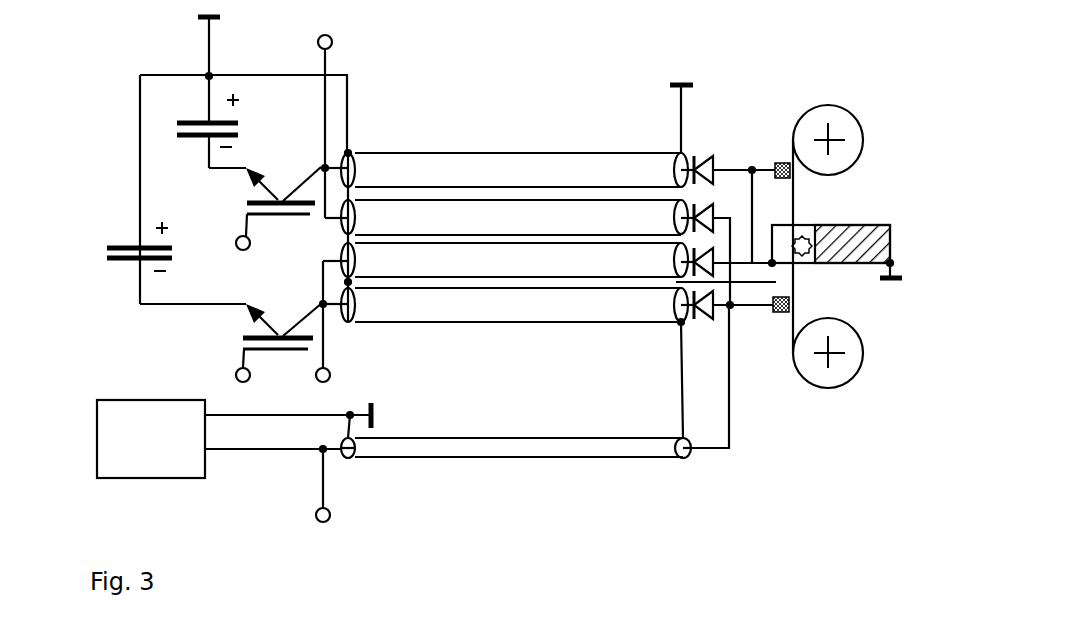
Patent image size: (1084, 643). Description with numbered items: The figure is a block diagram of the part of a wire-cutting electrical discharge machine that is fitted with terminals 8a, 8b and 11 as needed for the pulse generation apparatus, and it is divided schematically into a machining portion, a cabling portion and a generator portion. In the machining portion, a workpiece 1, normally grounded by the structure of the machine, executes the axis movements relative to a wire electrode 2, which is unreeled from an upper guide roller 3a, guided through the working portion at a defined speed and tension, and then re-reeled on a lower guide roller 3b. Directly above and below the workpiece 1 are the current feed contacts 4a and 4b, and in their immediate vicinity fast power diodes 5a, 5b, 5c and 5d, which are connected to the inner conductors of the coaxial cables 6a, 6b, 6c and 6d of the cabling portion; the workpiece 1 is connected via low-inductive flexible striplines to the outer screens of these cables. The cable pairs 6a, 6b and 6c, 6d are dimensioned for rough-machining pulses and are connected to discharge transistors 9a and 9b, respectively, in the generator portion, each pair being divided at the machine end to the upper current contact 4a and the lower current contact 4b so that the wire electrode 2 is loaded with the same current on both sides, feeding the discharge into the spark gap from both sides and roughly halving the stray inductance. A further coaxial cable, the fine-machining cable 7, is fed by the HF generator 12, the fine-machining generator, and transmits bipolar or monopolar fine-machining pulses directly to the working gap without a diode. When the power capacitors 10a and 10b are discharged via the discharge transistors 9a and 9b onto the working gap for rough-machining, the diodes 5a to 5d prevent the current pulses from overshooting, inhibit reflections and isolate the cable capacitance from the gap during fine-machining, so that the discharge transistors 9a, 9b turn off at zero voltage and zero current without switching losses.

The workpiece 1 is at (885, 225).
The wire electrode 2 is at (793, 198).
The upper guide roller 3a is at (862, 130).
The lower guide roller 3b is at (847, 338).
The upper current feed contact 4a is at (783, 163).
The lower current feed contact 4b is at (777, 317).
The fast power diode 5a is at (708, 157).
The fast power diode 5b is at (716, 203).
The fast power diode 5c is at (713, 266).
The fast power diode 5d is at (710, 312).
The coaxial cable 6a is at (450, 162).
The coaxial cable 6b is at (555, 212).
The coaxial cable 6c is at (472, 268).
The coaxial cable 6d is at (580, 312).
The fine-machining cable 7 is at (512, 448).
The terminal 8a is at (326, 109).
The terminal 8b is at (320, 383).
The discharge transistor 9a is at (278, 186).
The discharge transistor 9b is at (258, 320).
The power capacitor 10a is at (177, 127).
The power capacitor 10b is at (118, 263).
The terminal 11 is at (323, 504).
The HF generator 12 is at (128, 467).